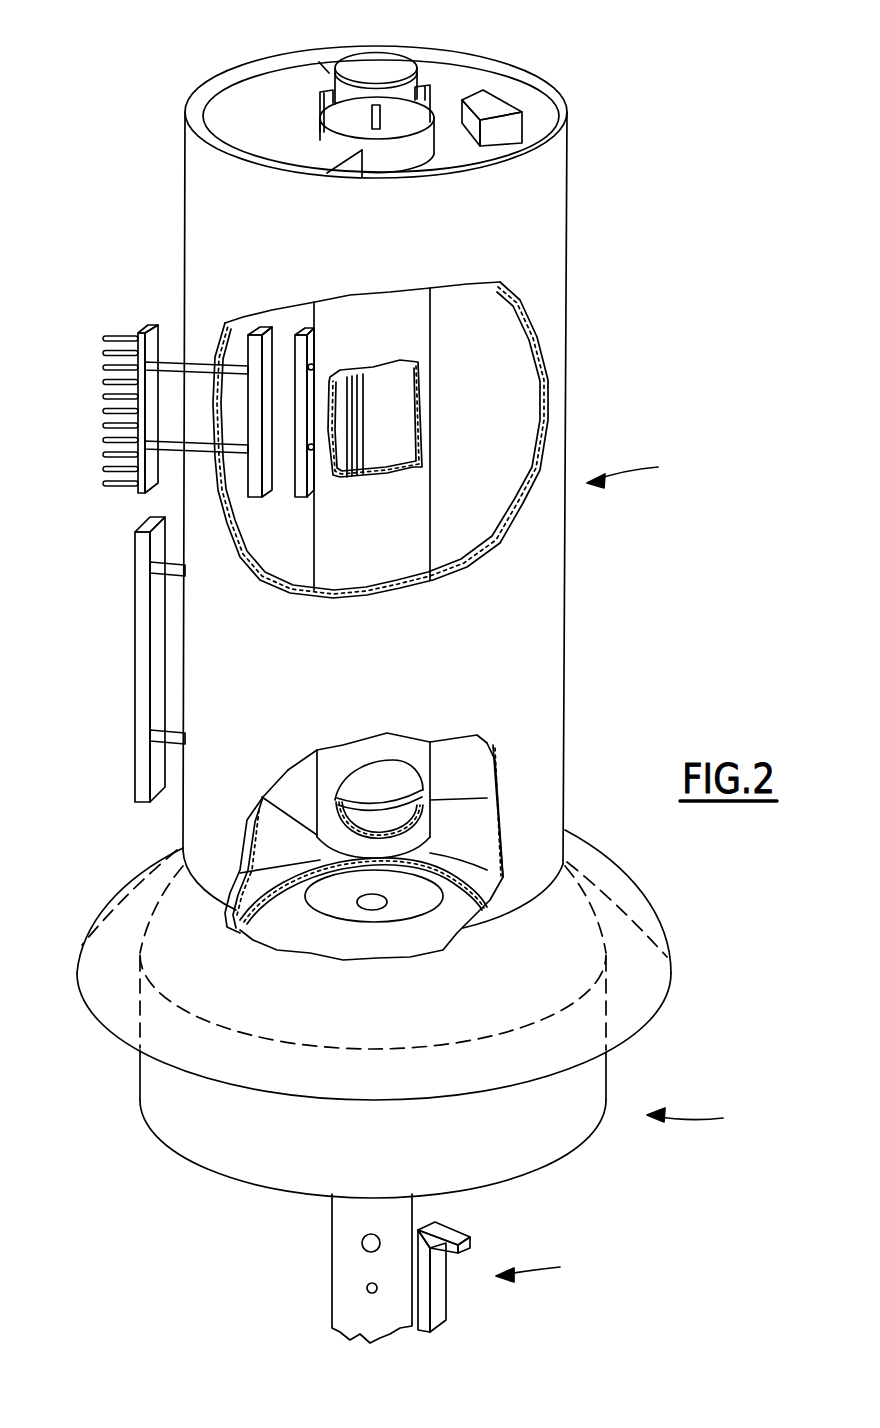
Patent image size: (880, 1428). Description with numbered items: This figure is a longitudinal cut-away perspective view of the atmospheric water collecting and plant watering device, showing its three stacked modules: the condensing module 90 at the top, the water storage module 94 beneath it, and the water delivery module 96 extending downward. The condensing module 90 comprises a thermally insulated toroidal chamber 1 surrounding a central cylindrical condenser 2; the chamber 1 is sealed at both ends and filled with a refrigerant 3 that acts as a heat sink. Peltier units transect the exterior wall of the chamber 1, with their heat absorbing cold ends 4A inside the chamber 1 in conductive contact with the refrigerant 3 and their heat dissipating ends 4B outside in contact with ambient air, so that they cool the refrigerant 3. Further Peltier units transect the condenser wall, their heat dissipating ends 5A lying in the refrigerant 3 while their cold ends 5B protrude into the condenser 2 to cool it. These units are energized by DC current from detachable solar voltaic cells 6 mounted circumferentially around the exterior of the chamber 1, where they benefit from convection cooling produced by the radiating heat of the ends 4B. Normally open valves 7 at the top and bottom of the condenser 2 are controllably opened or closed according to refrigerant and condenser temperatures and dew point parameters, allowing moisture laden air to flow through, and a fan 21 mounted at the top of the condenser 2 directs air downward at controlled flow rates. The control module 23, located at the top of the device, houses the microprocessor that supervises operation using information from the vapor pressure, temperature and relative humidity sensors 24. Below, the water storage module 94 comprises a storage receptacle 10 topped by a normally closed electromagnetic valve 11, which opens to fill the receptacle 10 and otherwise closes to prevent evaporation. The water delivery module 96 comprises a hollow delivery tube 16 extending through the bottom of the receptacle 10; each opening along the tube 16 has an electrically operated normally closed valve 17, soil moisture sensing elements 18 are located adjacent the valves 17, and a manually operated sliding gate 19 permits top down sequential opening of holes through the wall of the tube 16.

The toroidal chamber 1 is at (548, 203).
The condenser 2 is at (392, 442).
The refrigerant 3 is at (517, 385).
The cold ends of Peltier units 4A is at (260, 480).
The heat dissipating ends of Peltier units 4B is at (102, 407).
The heat dissipating ends of Peltier units 5A is at (287, 483).
The cold ends of Peltier units 5B is at (360, 408).
The solar voltaic cells 6 is at (137, 635).
The valves 7 is at (383, 780).
The storage receptacle 10 is at (590, 1082).
The electromagnetic valve 11 is at (362, 902).
The delivery tube 16 is at (340, 1240).
The valve 17 is at (377, 1242).
The soil moisture sensing elements 18 is at (367, 1288).
The sliding gate 19 is at (463, 1245).
The fan 21 is at (390, 63).
The control module 23 is at (227, 105).
The vapor pressure, temperature, and relative humidity sensors 24 is at (493, 107).
The condensing module 90 is at (648, 462).
The water storage module 94 is at (711, 1111).
The water delivery module 96 is at (554, 1267).